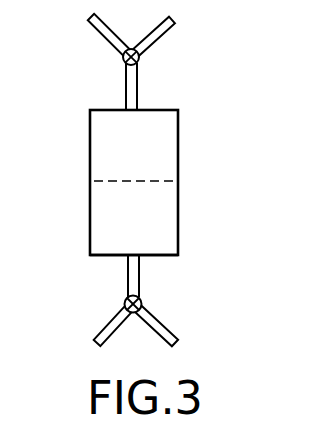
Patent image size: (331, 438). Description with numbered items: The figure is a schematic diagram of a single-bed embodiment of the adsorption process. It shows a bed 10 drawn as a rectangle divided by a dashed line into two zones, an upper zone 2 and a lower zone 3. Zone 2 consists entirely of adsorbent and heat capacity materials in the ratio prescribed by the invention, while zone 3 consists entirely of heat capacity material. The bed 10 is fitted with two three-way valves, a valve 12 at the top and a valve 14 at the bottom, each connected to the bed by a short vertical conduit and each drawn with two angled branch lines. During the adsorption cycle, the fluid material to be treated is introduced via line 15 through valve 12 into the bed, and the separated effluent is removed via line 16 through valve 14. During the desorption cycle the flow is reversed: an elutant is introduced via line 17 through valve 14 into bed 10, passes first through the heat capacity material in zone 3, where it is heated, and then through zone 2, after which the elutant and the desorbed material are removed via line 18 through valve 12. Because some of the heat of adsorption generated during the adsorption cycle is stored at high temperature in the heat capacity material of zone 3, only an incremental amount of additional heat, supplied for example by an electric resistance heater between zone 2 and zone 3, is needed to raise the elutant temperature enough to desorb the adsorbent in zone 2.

The bed 10 is at (89, 172).
The zone 2 is at (143, 155).
The zone 3 is at (143, 221).
The three-way valve 12 is at (122, 59).
The three-way valve 14 is at (125, 298).
The line 15 is at (103, 33).
The line 18 is at (160, 39).
The line 16 is at (99, 331).
The line 17 is at (174, 331).